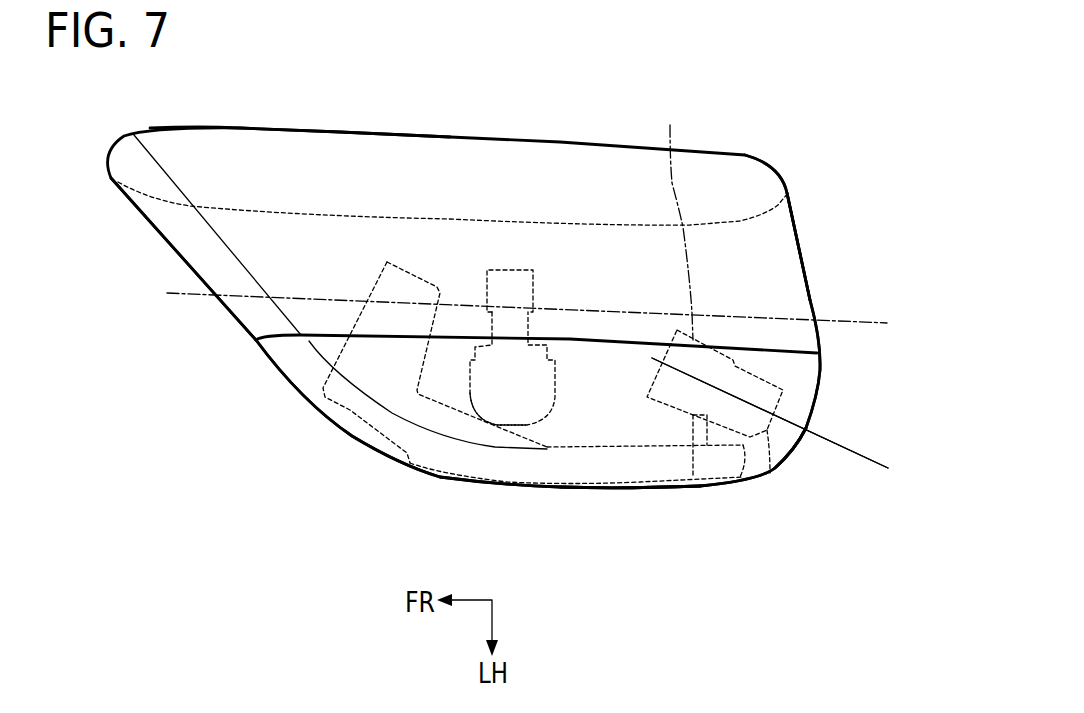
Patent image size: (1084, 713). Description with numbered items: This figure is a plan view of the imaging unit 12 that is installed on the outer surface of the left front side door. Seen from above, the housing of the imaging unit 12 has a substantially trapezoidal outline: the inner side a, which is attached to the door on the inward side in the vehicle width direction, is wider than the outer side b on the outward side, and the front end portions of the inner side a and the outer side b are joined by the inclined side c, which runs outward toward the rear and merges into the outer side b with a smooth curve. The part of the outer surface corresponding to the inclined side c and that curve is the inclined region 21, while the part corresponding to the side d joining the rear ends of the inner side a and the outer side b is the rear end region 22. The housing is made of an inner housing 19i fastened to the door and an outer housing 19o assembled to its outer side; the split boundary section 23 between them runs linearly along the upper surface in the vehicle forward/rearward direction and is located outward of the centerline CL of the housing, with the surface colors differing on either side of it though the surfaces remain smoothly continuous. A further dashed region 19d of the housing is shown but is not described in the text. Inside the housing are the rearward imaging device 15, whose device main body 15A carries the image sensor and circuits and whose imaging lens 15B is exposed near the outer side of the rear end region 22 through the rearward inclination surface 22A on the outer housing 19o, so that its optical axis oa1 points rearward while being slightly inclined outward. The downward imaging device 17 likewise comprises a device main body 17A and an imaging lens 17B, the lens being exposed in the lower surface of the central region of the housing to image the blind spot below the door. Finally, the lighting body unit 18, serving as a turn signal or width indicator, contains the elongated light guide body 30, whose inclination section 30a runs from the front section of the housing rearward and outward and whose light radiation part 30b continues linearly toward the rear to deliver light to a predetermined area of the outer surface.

The imaging unit 12 is at (756, 152).
The rear end region 22 is at (797, 226).
The inner housing 19i is at (805, 258).
The outer housing 19o is at (813, 363).
The upper boundary of opening 19d is at (278, 175).
The device main body 17A is at (533, 287).
The downward imaging device 17 is at (540, 431).
The imaging lens 17B is at (492, 427).
The rearward imaging device 15 is at (682, 412).
The device main body 15A is at (710, 483).
The imaging lens 15B is at (770, 473).
The light guide body 30 is at (560, 483).
The inclination section 30a is at (410, 463).
The light radiation part 30b is at (638, 483).
The lighting body unit 18 is at (613, 486).
The inclined region 21 is at (350, 435).
The split boundary section 23 is at (290, 338).
The rearward inclination surface 22A is at (783, 460).
The inner side a is at (350, 130).
The outer side b is at (503, 485).
The inclined side c is at (229, 312).
The side d is at (810, 285).
The centerline CL is at (674, 216).
The optical axis oa1 is at (850, 448).